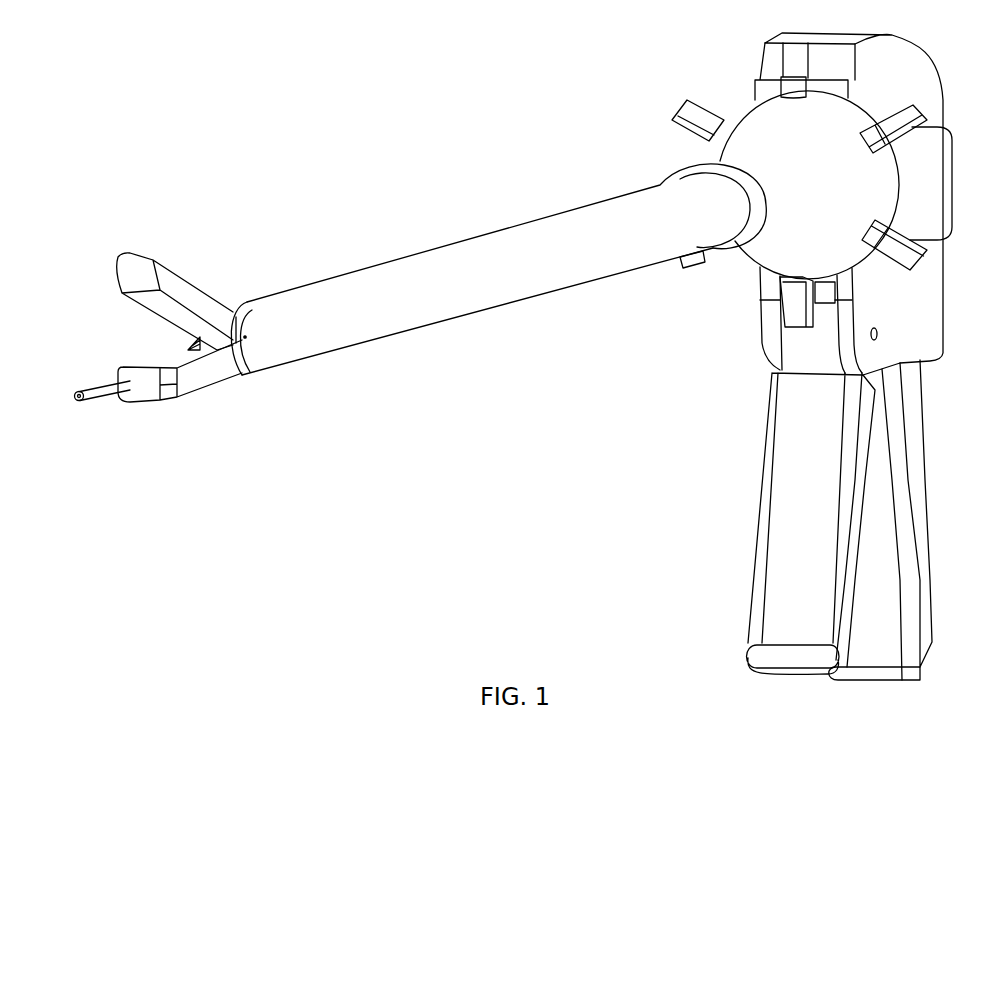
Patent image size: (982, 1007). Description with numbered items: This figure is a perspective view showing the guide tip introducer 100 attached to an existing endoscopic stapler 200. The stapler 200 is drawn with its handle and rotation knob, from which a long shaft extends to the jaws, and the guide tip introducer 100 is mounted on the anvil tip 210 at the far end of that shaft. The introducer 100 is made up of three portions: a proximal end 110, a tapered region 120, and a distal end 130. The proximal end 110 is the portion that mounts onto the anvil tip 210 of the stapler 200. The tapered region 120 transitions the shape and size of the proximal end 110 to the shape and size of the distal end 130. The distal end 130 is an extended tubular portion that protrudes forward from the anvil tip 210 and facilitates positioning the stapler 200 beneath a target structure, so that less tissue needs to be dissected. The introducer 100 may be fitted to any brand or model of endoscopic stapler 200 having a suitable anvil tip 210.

The guide tip introducer 100 is at (112, 413).
The proximal end 110 is at (162, 401).
The tapered region 120 is at (121, 367).
The distal end 130 is at (80, 388).
The endoscopic stapler 200 is at (568, 187).
The anvil tip 210 is at (218, 388).